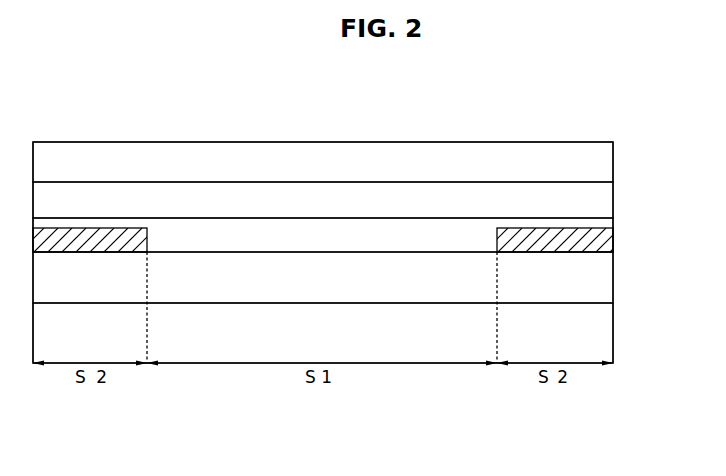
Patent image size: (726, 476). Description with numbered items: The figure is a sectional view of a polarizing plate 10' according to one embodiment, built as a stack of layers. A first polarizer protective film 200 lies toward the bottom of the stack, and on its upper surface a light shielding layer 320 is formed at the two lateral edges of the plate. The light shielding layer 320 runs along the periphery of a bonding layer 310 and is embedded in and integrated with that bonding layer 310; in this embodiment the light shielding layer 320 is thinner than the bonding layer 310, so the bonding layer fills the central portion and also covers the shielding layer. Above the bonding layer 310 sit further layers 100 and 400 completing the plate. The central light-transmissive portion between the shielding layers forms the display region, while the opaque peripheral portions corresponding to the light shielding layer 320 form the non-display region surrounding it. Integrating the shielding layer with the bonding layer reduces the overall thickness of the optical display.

The cover layer 400 is at (601, 167).
The display panel 100 is at (601, 203).
The bonding layer 310 is at (264, 230).
The light shielding layer 320 is at (601, 242).
The first polarizer protective film 200 is at (600, 276).
The polarizing plate 10' is at (323, 304).